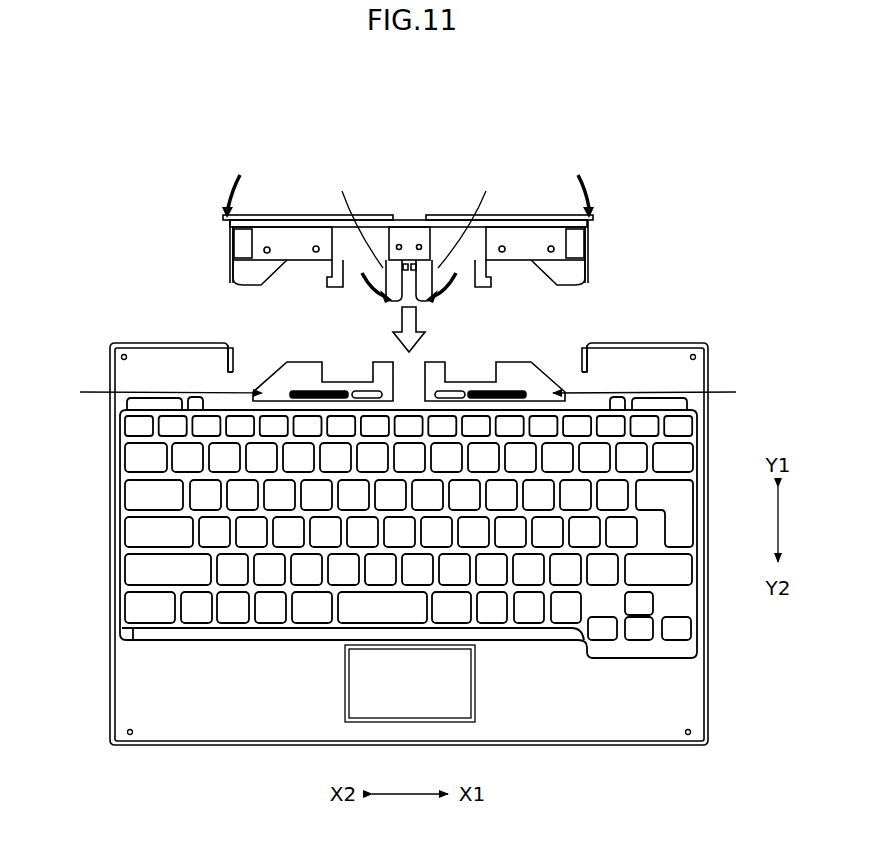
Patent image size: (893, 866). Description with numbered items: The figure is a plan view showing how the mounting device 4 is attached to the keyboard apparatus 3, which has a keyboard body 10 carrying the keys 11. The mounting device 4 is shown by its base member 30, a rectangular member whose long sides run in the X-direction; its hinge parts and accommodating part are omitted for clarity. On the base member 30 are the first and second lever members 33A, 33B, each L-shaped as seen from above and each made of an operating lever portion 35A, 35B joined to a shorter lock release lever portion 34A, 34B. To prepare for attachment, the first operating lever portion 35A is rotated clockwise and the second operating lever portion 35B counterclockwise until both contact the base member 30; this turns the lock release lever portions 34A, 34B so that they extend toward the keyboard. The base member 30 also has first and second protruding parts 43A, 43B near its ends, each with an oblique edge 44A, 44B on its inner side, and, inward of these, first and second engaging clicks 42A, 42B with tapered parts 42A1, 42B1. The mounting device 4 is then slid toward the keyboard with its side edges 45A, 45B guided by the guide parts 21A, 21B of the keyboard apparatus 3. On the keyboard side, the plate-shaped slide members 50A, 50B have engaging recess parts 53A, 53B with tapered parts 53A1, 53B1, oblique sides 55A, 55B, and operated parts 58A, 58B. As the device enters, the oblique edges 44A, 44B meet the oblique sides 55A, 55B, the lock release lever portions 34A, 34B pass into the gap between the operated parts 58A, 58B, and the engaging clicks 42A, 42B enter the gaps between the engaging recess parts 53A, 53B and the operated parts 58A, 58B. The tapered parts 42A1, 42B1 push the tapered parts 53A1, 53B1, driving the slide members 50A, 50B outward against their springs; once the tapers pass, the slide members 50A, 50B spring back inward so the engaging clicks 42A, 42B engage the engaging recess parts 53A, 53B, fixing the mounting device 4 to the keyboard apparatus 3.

The keyboard apparatus 3 is at (722, 682).
The mounting device 4 is at (409, 241).
The keyboard body 10 is at (141, 690).
The keys 11 is at (141, 529).
The first guide part 21A is at (583, 351).
The second guide part 21B is at (237, 351).
The base member 30 is at (409, 236).
The first lever member 33A is at (509, 175).
The second lever member 33B is at (308, 175).
The first lock release lever portion 34A is at (423, 283).
The second lock release lever portion 34B is at (395, 283).
The first operating lever portion 35A is at (523, 214).
The second operating lever portion 35B is at (293, 214).
The first engaging click 42A is at (486, 287).
The tapered part 42A1 is at (489, 283).
The second engaging click 42B is at (333, 287).
The tapered part 42B1 is at (328, 283).
The first protruding part 43A is at (580, 278).
The second protruding part 43B is at (240, 278).
The first oblique edge 44A is at (555, 262).
The second oblique edge 44B is at (284, 262).
The first side edge 45A is at (586, 243).
The second side edge 45B is at (232, 243).
The first slide member 50A is at (665, 392).
The second slide member 50B is at (151, 392).
The first engaging recess part 53A is at (437, 362).
The tapered part 53A1 is at (486, 362).
The second engaging recess part 53B is at (346, 362).
The tapered part 53B1 is at (332, 362).
The first oblique side 55A is at (556, 362).
The second oblique side 55B is at (266, 362).
The first operated part 58A is at (437, 368).
The second operated part 58B is at (385, 368).